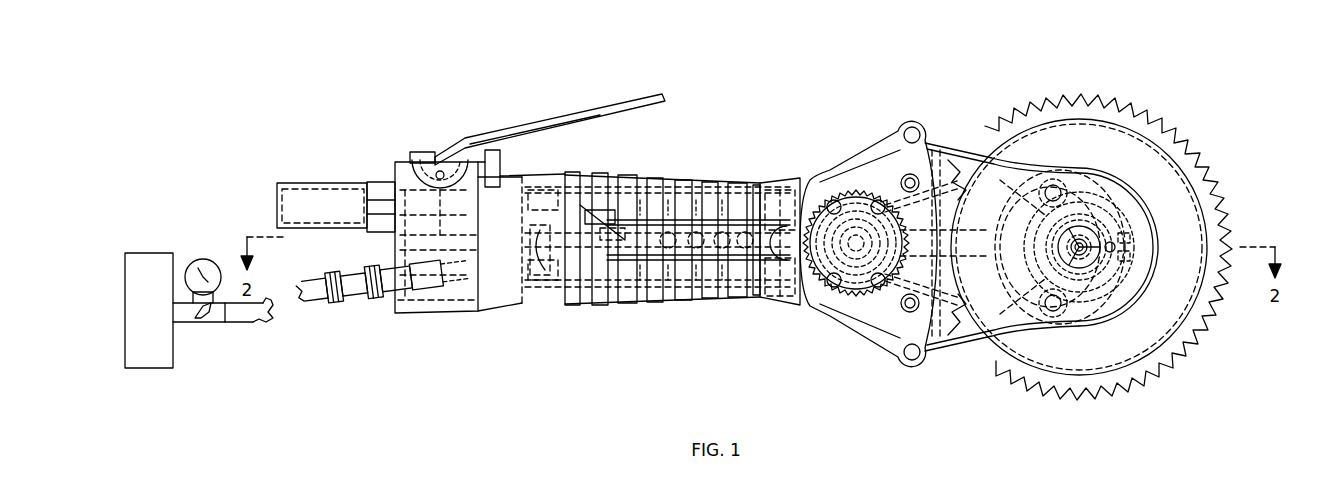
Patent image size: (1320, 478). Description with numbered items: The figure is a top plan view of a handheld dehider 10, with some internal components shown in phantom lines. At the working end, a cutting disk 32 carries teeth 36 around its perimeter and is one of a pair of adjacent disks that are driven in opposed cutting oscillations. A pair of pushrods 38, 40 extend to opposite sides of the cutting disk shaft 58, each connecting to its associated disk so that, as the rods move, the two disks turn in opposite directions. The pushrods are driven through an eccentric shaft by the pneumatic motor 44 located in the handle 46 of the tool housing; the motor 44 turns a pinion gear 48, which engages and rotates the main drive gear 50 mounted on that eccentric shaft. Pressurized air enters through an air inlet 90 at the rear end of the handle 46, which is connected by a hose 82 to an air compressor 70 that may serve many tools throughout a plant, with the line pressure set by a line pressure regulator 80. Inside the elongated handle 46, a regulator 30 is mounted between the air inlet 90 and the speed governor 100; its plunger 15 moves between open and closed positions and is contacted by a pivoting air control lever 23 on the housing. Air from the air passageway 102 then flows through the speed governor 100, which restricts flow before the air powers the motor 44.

The dehider 10 is at (740, 155).
The plunger 15 is at (503, 167).
The air control lever 23 is at (613, 108).
The regulator 30 is at (505, 292).
The cutting disk 32 is at (1168, 252).
The teeth 36 is at (1150, 122).
The pushrod 38 is at (1000, 207).
The pushrod 40 is at (1005, 330).
The pneumatic motor 44 is at (702, 300).
The handle 46 is at (630, 307).
The pinion gear 48 is at (800, 285).
The main drive gear 50 is at (822, 202).
The cutting disk shaft 58 is at (1080, 243).
The air compressor 70 is at (147, 360).
The line pressure regulator 80 is at (205, 322).
The hose 82 is at (310, 298).
The air inlet 90 is at (347, 302).
The speed governor 100 is at (590, 205).
The air passageway 102 is at (538, 240).